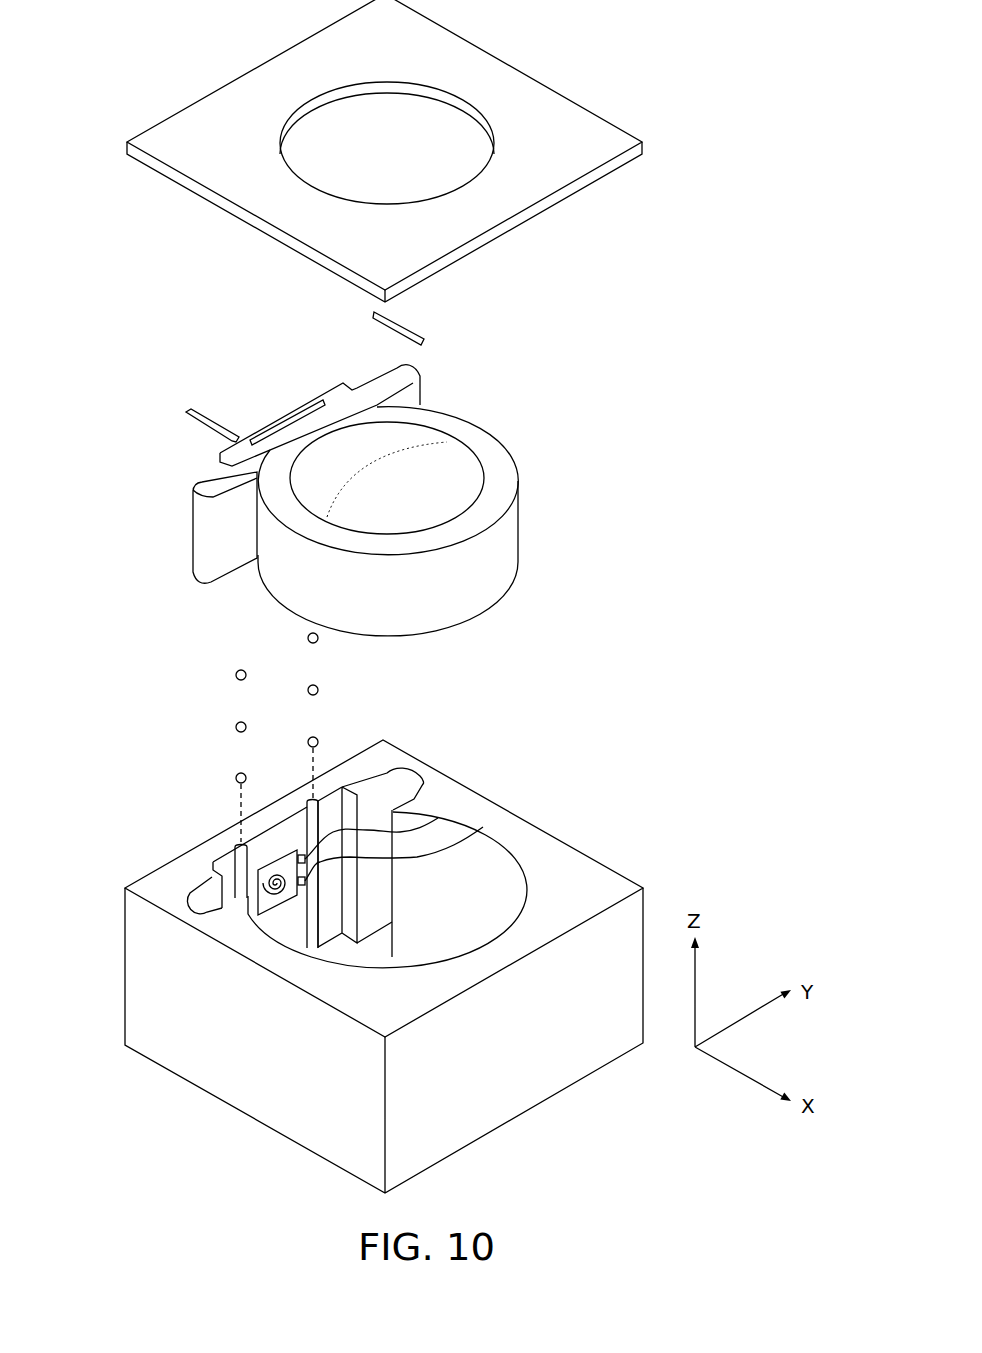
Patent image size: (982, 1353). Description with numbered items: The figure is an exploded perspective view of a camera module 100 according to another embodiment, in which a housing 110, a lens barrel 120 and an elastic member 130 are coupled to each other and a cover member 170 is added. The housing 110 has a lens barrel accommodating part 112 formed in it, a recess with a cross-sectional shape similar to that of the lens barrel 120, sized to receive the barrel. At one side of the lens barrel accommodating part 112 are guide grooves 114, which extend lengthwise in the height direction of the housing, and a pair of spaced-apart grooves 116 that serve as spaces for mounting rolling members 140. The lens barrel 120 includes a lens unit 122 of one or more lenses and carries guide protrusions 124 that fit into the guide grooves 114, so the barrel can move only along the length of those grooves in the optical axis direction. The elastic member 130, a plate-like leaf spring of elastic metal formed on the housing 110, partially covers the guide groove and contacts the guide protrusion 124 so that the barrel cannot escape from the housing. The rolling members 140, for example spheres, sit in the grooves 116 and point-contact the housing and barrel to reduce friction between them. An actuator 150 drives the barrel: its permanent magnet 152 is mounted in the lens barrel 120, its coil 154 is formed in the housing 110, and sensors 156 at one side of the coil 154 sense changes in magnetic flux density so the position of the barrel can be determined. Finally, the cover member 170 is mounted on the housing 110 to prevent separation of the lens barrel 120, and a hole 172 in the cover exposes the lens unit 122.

The camera module 100 is at (648, 79).
The housing 110 is at (238, 1072).
The lens barrel accommodating part 112 is at (459, 893).
The guide groove 114 is at (206, 896).
The groove 116 is at (240, 845).
The lens barrel 120 is at (507, 542).
The lens unit 122 is at (455, 472).
The guide protrusion 124 is at (205, 485).
The elastic member 130 is at (190, 410).
The rolling member 140 is at (231, 673).
The actuator 150 is at (636, 597).
The permanent magnet 152 is at (283, 422).
The coil 154 is at (438, 818).
The sensor 156 is at (483, 827).
The cover member 170 is at (550, 167).
The hole 172 is at (427, 168).